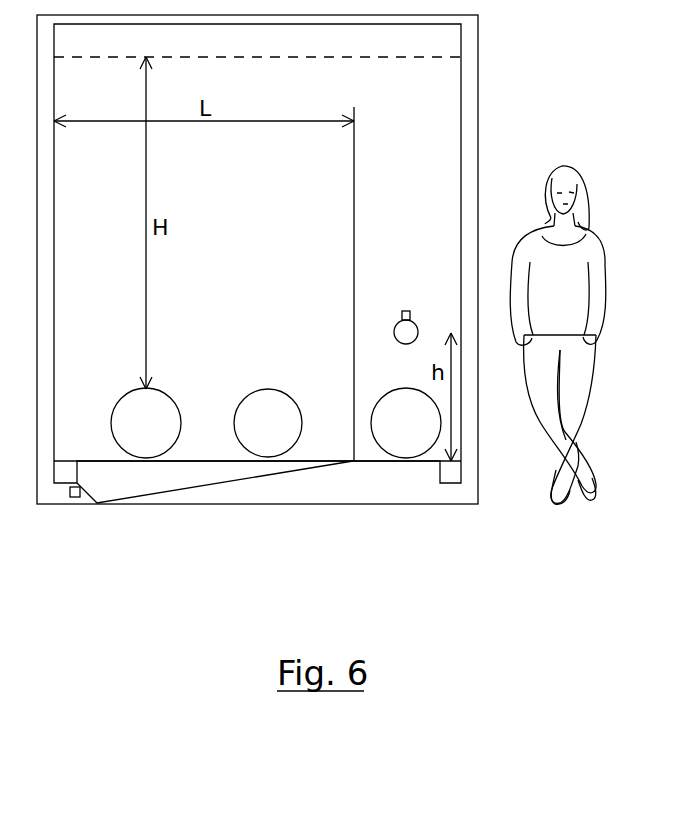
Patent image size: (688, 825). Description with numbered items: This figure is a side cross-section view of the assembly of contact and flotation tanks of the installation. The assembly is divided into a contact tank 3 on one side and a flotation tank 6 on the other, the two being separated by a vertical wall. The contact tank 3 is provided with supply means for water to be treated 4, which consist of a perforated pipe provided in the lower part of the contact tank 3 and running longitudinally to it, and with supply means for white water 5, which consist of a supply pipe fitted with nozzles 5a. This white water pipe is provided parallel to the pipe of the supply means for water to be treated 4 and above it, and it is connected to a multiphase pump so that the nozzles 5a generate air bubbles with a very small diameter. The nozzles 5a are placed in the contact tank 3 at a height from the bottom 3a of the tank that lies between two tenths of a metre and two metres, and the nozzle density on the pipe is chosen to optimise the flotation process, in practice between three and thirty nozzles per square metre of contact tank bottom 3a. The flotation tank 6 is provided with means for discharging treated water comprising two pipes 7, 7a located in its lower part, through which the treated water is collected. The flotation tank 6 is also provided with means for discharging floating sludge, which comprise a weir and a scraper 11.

The contact tank 3 is at (409, 254).
The bottom of the contact tank 3a is at (418, 462).
The supply means for water to be treated 4 is at (415, 438).
The supply means for white water 5 is at (405, 338).
The nozzles 5a is at (412, 318).
The flotation tank 6 is at (243, 254).
The pipe 7 is at (155, 438).
The pipe 7a is at (285, 438).
The scraper 11 is at (345, 156).